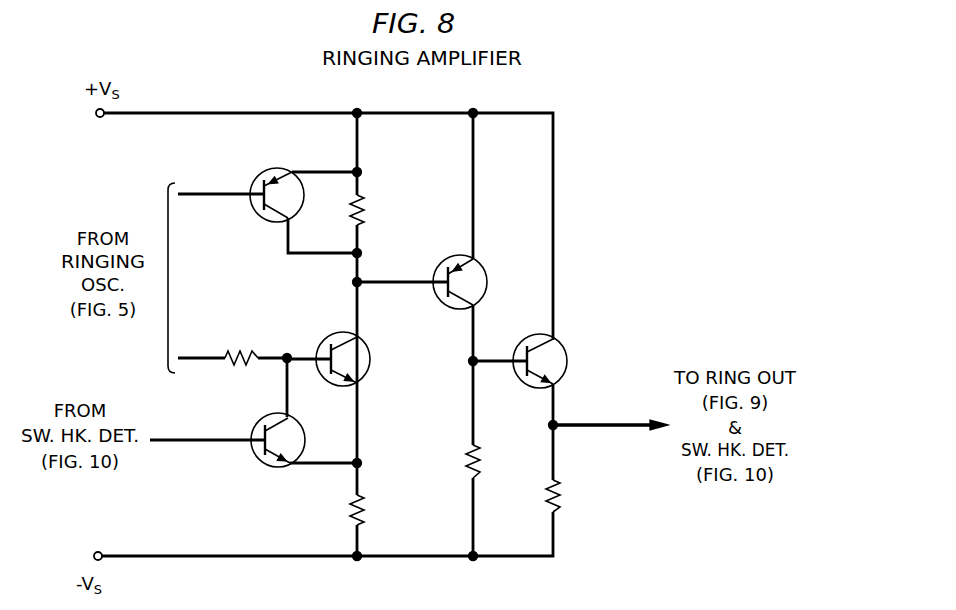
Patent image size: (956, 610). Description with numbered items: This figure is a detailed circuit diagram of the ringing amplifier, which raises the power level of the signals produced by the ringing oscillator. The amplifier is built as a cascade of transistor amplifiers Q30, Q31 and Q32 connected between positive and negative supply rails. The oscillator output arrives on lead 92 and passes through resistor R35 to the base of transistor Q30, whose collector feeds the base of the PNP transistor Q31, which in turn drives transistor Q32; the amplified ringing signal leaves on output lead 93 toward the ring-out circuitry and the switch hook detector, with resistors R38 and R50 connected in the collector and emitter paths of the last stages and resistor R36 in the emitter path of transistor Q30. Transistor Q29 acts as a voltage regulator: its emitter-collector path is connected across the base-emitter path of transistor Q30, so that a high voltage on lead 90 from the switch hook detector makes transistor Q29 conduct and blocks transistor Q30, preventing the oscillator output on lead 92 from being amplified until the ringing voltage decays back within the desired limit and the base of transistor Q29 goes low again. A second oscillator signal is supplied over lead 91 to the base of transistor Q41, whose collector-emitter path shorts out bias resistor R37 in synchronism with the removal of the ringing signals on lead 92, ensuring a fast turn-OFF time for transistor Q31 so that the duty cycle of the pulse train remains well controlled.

The lead 90 is at (165, 443).
The lead 91 is at (212, 197).
The lead 92 is at (203, 361).
The lead 93 is at (615, 428).
The transistor Q29 is at (297, 423).
The transistor Q30 is at (366, 372).
The transistor Q31 is at (480, 262).
The transistor Q32 is at (564, 345).
The transistor Q41 is at (280, 168).
The resistor R35 is at (243, 341).
The resistor R36 is at (378, 510).
The bias resistor R37 is at (378, 210).
The resistor R38 is at (448, 461).
The resistor R50 is at (529, 496).